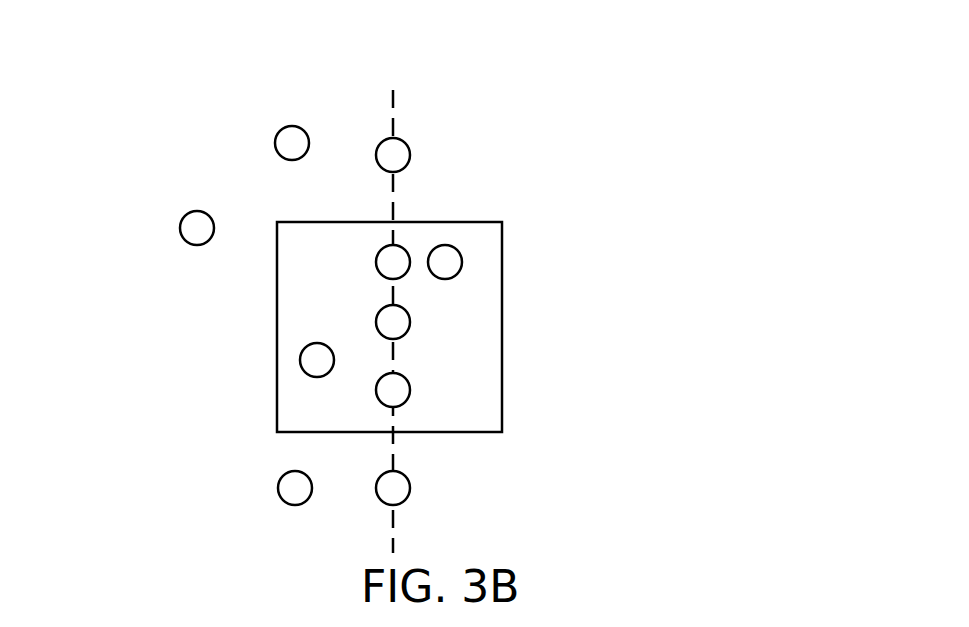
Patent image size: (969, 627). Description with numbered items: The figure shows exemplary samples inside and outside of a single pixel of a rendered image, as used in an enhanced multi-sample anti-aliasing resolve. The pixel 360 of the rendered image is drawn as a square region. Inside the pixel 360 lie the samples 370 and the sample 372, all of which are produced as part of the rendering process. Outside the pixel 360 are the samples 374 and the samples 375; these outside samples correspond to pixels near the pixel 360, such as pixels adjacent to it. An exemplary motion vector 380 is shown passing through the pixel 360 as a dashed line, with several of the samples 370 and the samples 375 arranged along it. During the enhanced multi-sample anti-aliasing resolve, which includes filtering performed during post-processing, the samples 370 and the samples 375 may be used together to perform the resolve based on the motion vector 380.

The pixel 360 is at (273, 365).
The samples inside pixel 370 is at (417, 383).
The sample inside pixel 372 is at (300, 355).
The samples outside pixel 374 is at (279, 487).
The samples outside pixel 375 is at (414, 487).
The motion vector 380 is at (393, 88).